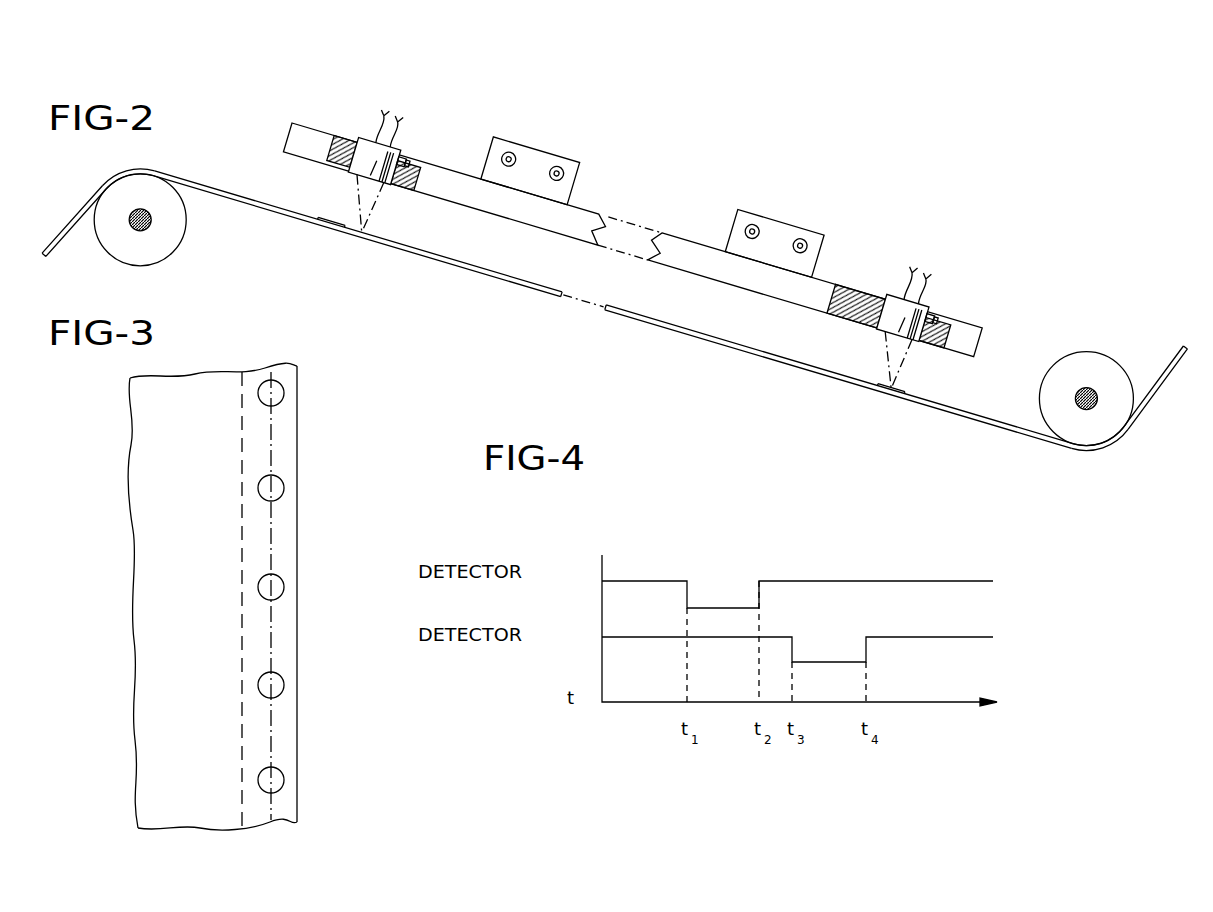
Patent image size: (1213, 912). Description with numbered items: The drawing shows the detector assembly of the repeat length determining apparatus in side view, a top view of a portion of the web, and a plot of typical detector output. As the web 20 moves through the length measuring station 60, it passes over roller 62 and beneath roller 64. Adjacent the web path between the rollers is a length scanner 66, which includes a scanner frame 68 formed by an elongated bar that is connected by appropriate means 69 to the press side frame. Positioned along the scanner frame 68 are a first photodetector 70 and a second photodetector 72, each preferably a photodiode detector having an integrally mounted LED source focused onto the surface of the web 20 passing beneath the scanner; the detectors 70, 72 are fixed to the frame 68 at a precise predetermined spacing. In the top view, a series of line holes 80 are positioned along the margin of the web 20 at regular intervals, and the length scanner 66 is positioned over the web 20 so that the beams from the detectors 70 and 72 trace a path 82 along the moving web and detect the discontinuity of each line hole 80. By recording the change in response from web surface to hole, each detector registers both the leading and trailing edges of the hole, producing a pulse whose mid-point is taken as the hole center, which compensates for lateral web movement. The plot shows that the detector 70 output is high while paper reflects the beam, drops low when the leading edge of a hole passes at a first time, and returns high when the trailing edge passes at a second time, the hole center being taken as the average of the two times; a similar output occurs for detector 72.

In FIG. 2, the web 20 is at (458, 268).
In FIG. 3, the web 20 is at (147, 605).
In FIG. 2, the length measuring station 60 is at (632, 227).
In FIG. 2, the roller 62 is at (178, 238).
In FIG. 2, the roller 64 is at (1097, 360).
In FIG. 2, the length scanner 66 is at (711, 243).
In FIG. 2, the scanner frame 68 is at (588, 214).
In FIG. 2, the connecting means 69 is at (537, 153).
In FIG. 2, the first photodetector 70 is at (889, 290).
In FIG. 4, the first photodetector 70 is at (771, 584).
In FIG. 2, the second photodetector 72 is at (358, 150).
In FIG. 4, the second photodetector 72 is at (771, 643).
In FIG. 3, the line holes 80 is at (284, 392).
In FIG. 3, the path 82 is at (271, 470).